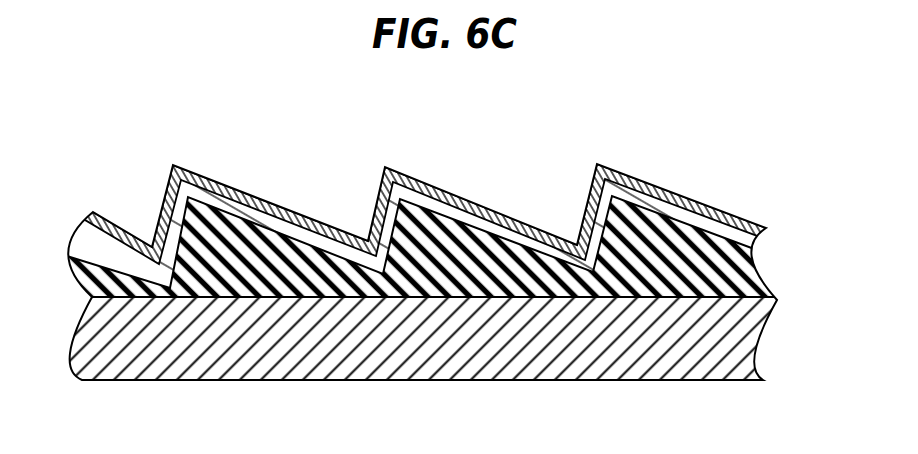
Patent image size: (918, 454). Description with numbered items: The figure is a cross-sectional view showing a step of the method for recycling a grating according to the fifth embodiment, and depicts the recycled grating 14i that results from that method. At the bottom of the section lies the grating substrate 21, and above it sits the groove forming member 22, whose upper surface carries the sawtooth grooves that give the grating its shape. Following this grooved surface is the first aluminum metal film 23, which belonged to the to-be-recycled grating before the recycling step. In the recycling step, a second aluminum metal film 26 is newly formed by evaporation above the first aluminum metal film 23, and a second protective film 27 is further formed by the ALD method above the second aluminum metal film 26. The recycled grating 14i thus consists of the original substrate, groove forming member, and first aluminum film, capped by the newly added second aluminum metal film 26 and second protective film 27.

The recycled grating 14i is at (458, 94).
The grating substrate 21 is at (728, 363).
The groove forming member 22 is at (242, 270).
The first aluminum metal film 23 is at (300, 237).
The second aluminum metal film 26 is at (487, 203).
The second protective film 27 is at (538, 222).